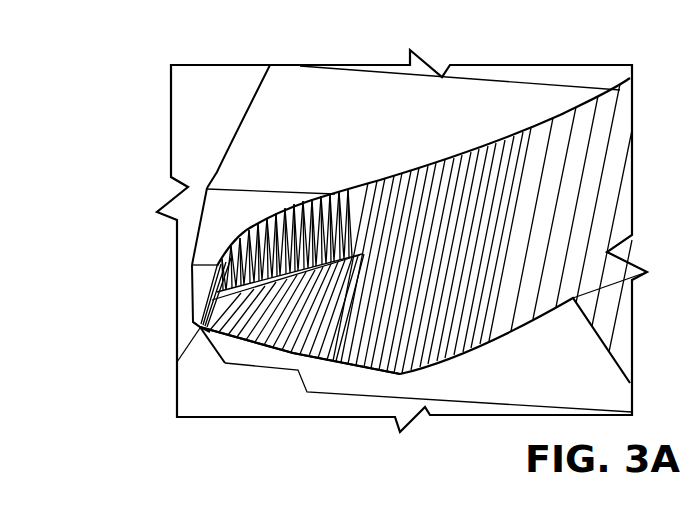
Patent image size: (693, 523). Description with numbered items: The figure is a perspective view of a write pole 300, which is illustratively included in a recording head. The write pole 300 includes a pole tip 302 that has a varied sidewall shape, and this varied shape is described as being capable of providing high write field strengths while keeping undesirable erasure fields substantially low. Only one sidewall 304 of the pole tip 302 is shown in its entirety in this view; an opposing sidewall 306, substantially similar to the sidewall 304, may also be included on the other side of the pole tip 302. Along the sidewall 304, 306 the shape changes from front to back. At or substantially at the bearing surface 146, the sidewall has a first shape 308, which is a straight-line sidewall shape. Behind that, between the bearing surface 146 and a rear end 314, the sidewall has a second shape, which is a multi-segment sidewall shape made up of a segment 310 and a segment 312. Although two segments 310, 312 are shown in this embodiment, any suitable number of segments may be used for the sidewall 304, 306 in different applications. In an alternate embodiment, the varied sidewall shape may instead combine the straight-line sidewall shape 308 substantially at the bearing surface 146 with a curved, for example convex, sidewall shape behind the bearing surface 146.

The write pole 300 is at (480, 98).
The pole tip 302 is at (246, 188).
The opposing sidewall 306 is at (190, 214).
The bearing surface 146 is at (202, 283).
The first shape 308 is at (200, 330).
The segment 310 is at (262, 340).
The sidewall 304 is at (308, 322).
The rear end 314 is at (367, 267).
The segment 312 is at (322, 238).